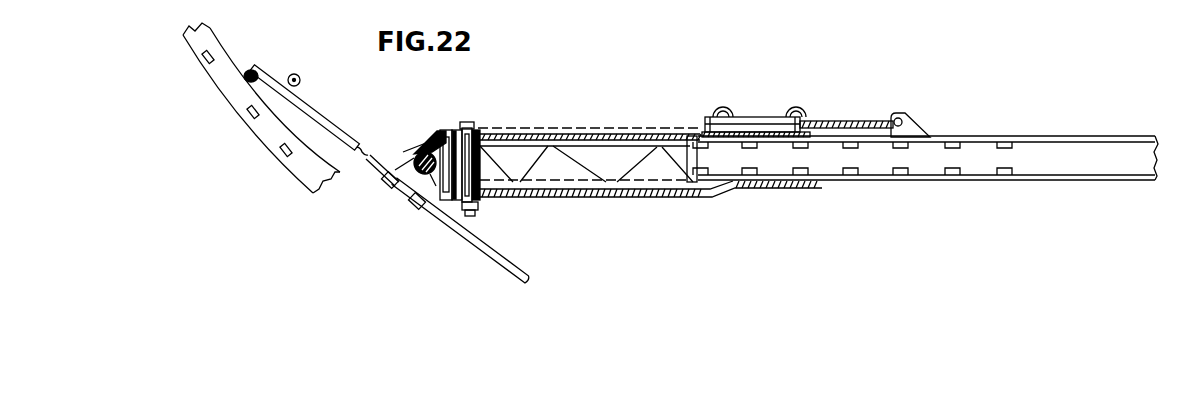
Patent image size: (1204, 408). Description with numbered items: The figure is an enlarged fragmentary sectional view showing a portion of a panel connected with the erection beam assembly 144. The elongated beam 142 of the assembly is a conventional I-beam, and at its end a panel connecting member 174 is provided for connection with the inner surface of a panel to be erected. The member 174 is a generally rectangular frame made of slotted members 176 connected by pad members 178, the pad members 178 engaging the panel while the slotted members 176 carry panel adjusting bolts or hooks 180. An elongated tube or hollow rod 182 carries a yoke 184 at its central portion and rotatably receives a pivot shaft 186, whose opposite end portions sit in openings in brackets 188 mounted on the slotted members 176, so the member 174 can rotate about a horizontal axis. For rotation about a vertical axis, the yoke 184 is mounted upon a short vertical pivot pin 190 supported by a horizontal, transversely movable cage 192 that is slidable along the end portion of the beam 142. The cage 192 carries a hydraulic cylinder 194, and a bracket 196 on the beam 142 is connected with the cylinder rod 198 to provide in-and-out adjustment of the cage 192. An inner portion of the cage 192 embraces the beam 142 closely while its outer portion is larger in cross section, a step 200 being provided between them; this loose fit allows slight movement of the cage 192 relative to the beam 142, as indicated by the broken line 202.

The elongated beam 142 is at (1063, 135).
The erection beam assembly 144 is at (925, 127).
The panel connecting member 174 is at (512, 251).
The slotted member 176 is at (335, 127).
The pad member 178 is at (250, 70).
The panel adjusting bolt or hook 180 is at (303, 78).
The elongated tube or hollow rod 182 is at (421, 150).
The yoke 184 is at (416, 208).
The pivot shaft 186 is at (386, 185).
The bracket 188 is at (407, 148).
The short vertical pivot pin 190 is at (474, 122).
The cage 192 is at (607, 198).
The hydraulic cylinder 194 is at (758, 120).
The bracket 196 is at (913, 125).
The rod 198 is at (850, 120).
The step 200 is at (727, 194).
The broken line 202 is at (601, 129).